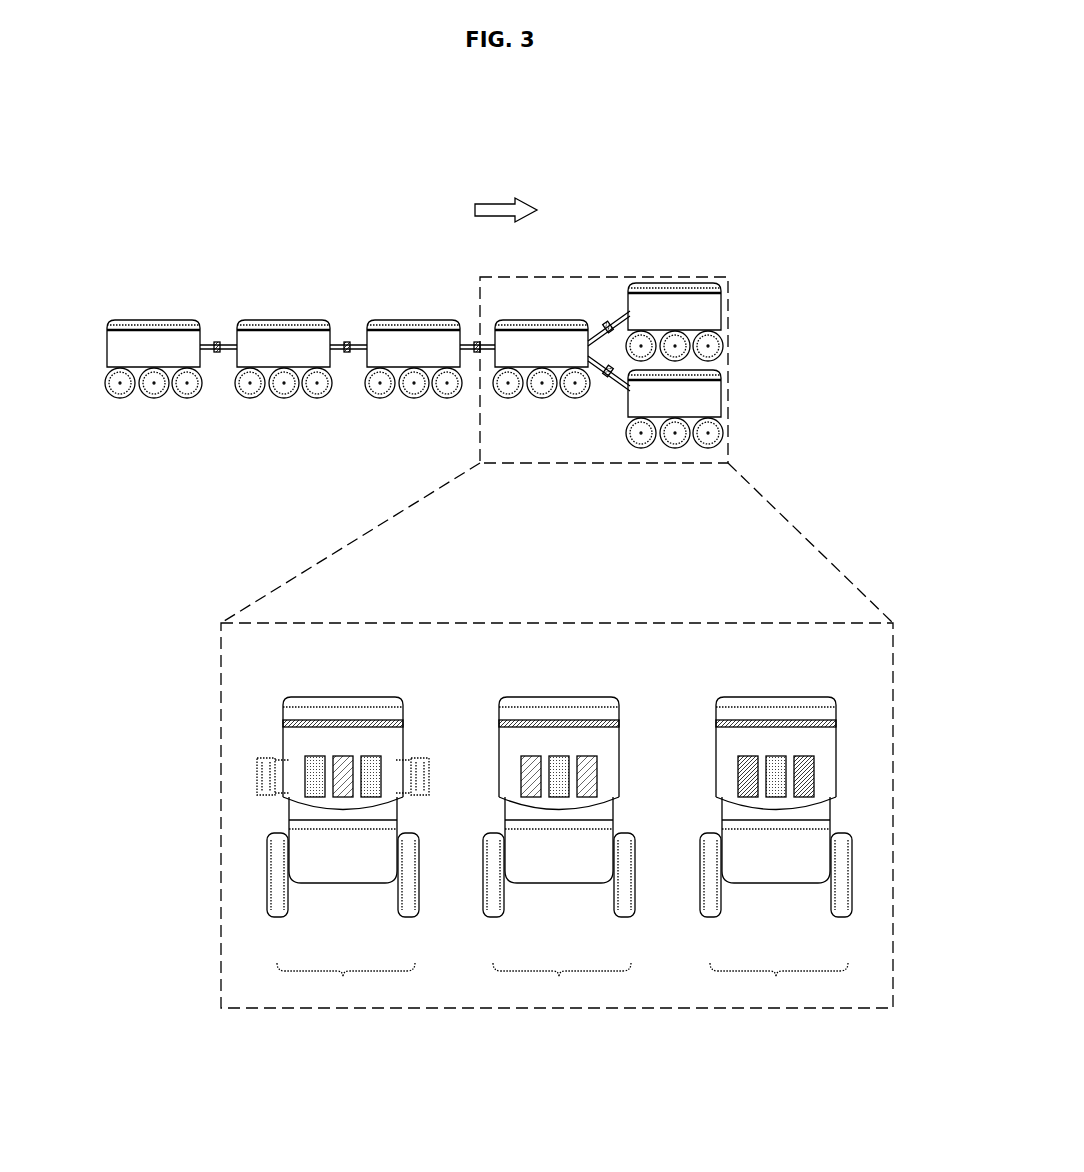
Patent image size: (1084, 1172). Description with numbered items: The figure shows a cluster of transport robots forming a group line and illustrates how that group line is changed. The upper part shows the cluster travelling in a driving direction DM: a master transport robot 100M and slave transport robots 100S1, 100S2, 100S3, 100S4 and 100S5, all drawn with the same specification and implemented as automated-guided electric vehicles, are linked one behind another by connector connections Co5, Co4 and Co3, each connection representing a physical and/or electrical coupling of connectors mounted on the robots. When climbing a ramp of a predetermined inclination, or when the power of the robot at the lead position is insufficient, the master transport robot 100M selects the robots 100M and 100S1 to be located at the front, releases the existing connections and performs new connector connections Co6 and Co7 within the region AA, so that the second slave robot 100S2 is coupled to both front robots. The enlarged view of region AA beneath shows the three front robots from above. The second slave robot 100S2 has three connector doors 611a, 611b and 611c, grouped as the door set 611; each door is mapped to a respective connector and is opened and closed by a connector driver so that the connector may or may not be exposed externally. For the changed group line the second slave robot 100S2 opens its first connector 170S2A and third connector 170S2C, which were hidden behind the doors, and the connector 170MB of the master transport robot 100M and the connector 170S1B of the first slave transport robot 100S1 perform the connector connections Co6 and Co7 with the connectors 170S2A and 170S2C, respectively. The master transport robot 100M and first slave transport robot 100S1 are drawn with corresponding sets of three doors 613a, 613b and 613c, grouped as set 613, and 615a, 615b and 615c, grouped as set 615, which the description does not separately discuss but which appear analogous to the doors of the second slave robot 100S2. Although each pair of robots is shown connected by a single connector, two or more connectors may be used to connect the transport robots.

The driving direction DM is at (506, 197).
The new connector connection region AA is at (705, 265).
The master transport robot 100M is at (716, 316).
The first slave transport robot 100S1 is at (716, 403).
The second slave transport robot 100S2 is at (507, 400).
The third slave transport robot 100S3 is at (410, 400).
The fourth slave transport robot 100S4 is at (282, 400).
The fifth slave transport robot 100S5 is at (152, 400).
The connector connection Co3 is at (476, 338).
The connector connection Co4 is at (346, 338).
The connector connection Co5 is at (216, 338).
The new connector connection Co6 is at (604, 325).
The new connector connection Co7 is at (606, 385).
The first connector 170S2A is at (272, 760).
The third connector 170S2C is at (413, 760).
The connector of master transport robot 170MB is at (559, 785).
The connector of first slave transport robot 170S1B is at (776, 785).
The connector doors 611 is at (346, 983).
The first connector door 611a is at (315, 797).
The second connector door 611b is at (343, 797).
The third connector door 611c is at (371, 797).
The sensing unit of master robot 613 is at (562, 983).
The first sensor 613a is at (531, 797).
The second sensor 613b is at (559, 797).
The third sensor 613c is at (587, 797).
The sensing unit of first slave robot 615 is at (779, 983).
The first sensor 615a is at (748, 797).
The second sensor 615b is at (776, 797).
The third sensor 615c is at (804, 797).